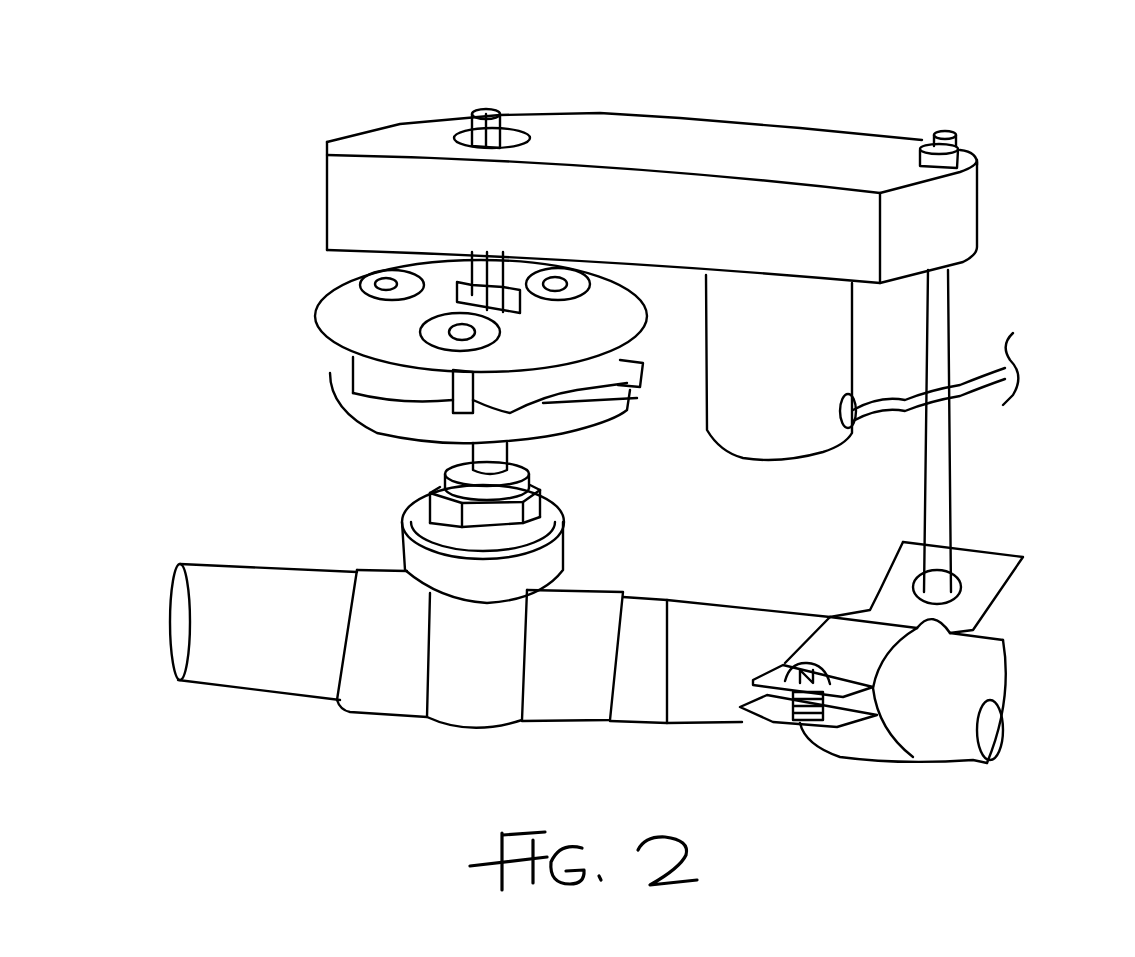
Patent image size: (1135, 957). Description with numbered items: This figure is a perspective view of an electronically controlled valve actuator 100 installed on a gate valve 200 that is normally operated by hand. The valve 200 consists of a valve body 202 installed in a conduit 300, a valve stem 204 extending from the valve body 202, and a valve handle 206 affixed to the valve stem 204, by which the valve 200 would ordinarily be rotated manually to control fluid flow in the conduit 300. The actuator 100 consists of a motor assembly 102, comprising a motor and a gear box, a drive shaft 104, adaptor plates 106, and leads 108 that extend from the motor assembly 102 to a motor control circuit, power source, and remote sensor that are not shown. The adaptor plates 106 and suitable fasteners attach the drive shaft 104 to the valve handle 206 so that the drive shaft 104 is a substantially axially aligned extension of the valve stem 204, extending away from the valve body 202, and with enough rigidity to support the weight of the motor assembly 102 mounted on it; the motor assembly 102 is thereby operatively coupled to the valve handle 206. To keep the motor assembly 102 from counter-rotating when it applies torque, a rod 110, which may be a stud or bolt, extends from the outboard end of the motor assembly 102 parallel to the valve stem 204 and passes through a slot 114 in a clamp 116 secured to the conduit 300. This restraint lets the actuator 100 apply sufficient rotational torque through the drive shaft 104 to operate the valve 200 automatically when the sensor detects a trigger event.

The electronically controlled valve actuator 100 is at (983, 82).
The motor assembly 102 is at (668, 120).
The drive shaft 104 is at (410, 270).
The adaptor plates 106 is at (330, 378).
The leads 108 is at (967, 400).
The rod 110 is at (948, 467).
The slot 114 is at (960, 588).
The clamp 116 is at (990, 608).
The valve 200 is at (512, 787).
The valve body 202 is at (578, 730).
The valve stem 204 is at (455, 459).
The valve handle 206 is at (547, 400).
The conduit 300 is at (1125, 738).